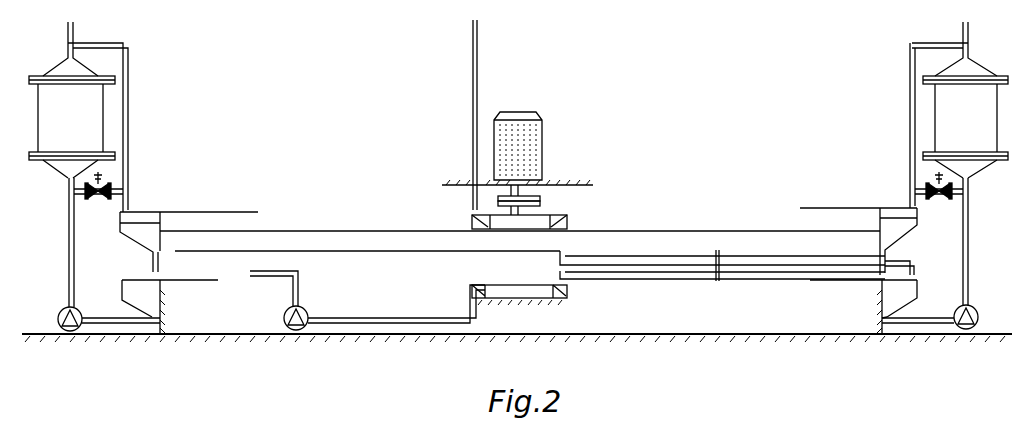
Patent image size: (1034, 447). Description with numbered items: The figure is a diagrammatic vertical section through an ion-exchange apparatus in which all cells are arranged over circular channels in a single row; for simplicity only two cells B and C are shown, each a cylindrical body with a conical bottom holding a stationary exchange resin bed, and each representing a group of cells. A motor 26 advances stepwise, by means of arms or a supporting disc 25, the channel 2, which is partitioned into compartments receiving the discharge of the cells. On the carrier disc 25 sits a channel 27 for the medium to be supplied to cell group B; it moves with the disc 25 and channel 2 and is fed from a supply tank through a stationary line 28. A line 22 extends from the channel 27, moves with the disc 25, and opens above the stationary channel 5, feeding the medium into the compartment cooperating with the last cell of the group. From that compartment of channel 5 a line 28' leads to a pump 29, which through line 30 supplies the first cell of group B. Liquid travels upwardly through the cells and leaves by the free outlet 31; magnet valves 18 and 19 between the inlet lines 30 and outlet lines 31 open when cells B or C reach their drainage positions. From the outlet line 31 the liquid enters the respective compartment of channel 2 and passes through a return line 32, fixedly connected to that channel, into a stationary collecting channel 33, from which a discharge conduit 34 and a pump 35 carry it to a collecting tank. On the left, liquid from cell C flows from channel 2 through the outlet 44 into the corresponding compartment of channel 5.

The channel 2 is at (141, 233).
The stationary channel 5 is at (125, 287).
The magnet valve 18 is at (939, 197).
The magnet valve 19 is at (98, 198).
The line 22 is at (643, 264).
The supporting disc 25 is at (745, 231).
The motor 26 is at (540, 147).
The channel 27 is at (567, 215).
The stationary line 28 is at (457, 115).
The line 28' is at (918, 306).
The pump 29 is at (58, 317).
The inlet line 30 is at (69, 236).
The free outlet 31 is at (124, 136).
The return line 32 is at (742, 276).
The stationary collecting channel 33 is at (556, 291).
The discharge conduit 34 is at (388, 318).
The pump 35 is at (307, 313).
The outlet 44 is at (158, 262).
The cell B is at (965, 100).
The cell C is at (72, 100).